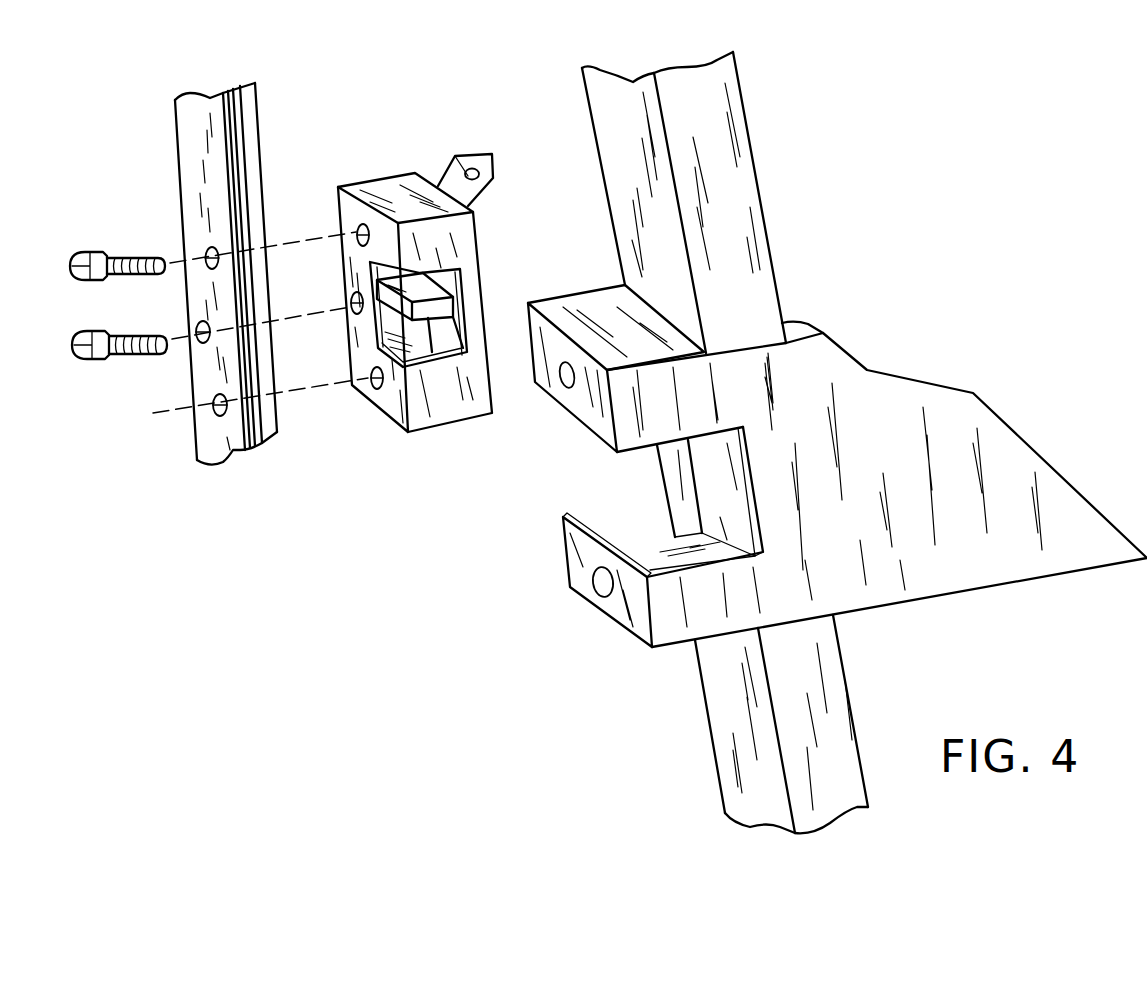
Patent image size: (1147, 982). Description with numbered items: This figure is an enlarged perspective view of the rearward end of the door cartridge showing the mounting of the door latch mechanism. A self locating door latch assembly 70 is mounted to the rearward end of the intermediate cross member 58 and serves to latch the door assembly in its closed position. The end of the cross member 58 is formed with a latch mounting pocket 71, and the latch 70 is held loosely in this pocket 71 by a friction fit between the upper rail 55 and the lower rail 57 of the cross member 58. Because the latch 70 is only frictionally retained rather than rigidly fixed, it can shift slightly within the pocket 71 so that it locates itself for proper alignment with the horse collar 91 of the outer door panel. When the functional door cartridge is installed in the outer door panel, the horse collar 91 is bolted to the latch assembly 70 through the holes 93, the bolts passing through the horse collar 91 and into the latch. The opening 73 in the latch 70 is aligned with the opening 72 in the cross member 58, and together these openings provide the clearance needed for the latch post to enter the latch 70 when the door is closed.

The upper rail 55 is at (615, 287).
The lower rail 57 is at (596, 579).
The intermediate cross member 58 is at (893, 605).
The self locating door latch assembly 70 is at (462, 427).
The latch mounting pocket 71 is at (548, 514).
The opening in cross member 72 is at (647, 451).
The opening of latch 73 is at (377, 350).
The horse collar 91 is at (282, 426).
The holes 93 is at (208, 252).